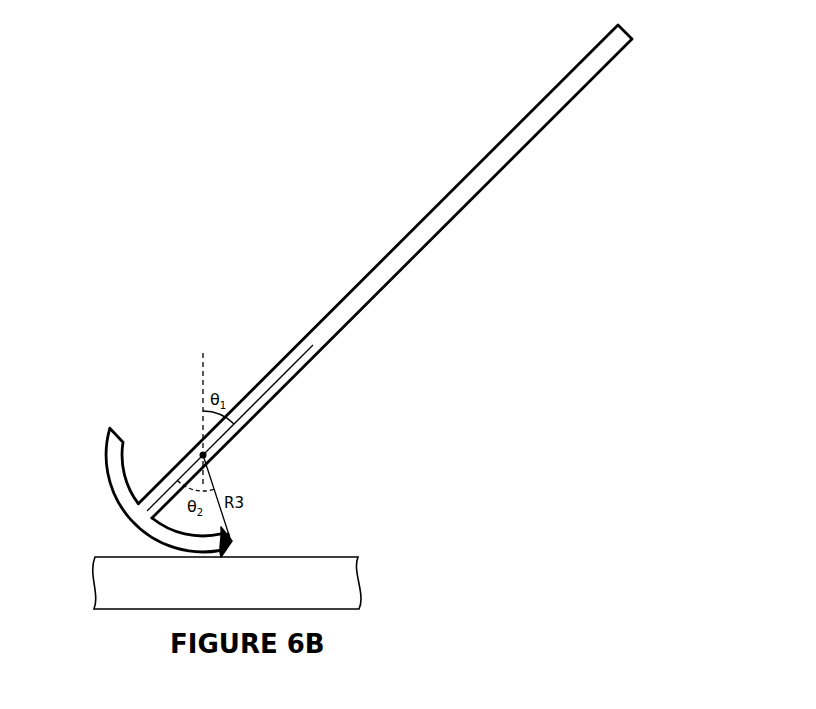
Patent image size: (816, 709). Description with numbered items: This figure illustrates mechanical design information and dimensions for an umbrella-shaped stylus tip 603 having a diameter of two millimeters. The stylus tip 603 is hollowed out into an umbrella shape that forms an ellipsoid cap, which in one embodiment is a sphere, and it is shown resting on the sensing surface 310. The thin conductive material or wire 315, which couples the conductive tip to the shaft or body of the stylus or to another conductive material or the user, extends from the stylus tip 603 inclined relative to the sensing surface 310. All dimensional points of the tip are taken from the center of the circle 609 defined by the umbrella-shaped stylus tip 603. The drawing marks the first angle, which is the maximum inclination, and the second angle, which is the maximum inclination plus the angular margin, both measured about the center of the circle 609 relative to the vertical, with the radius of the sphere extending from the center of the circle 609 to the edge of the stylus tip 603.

The thin conductive material or wire 315 is at (440, 215).
The umbrella-shaped stylus tip 603 is at (112, 445).
The center of the circle 609 is at (206, 456).
The sensing surface 310 is at (353, 578).